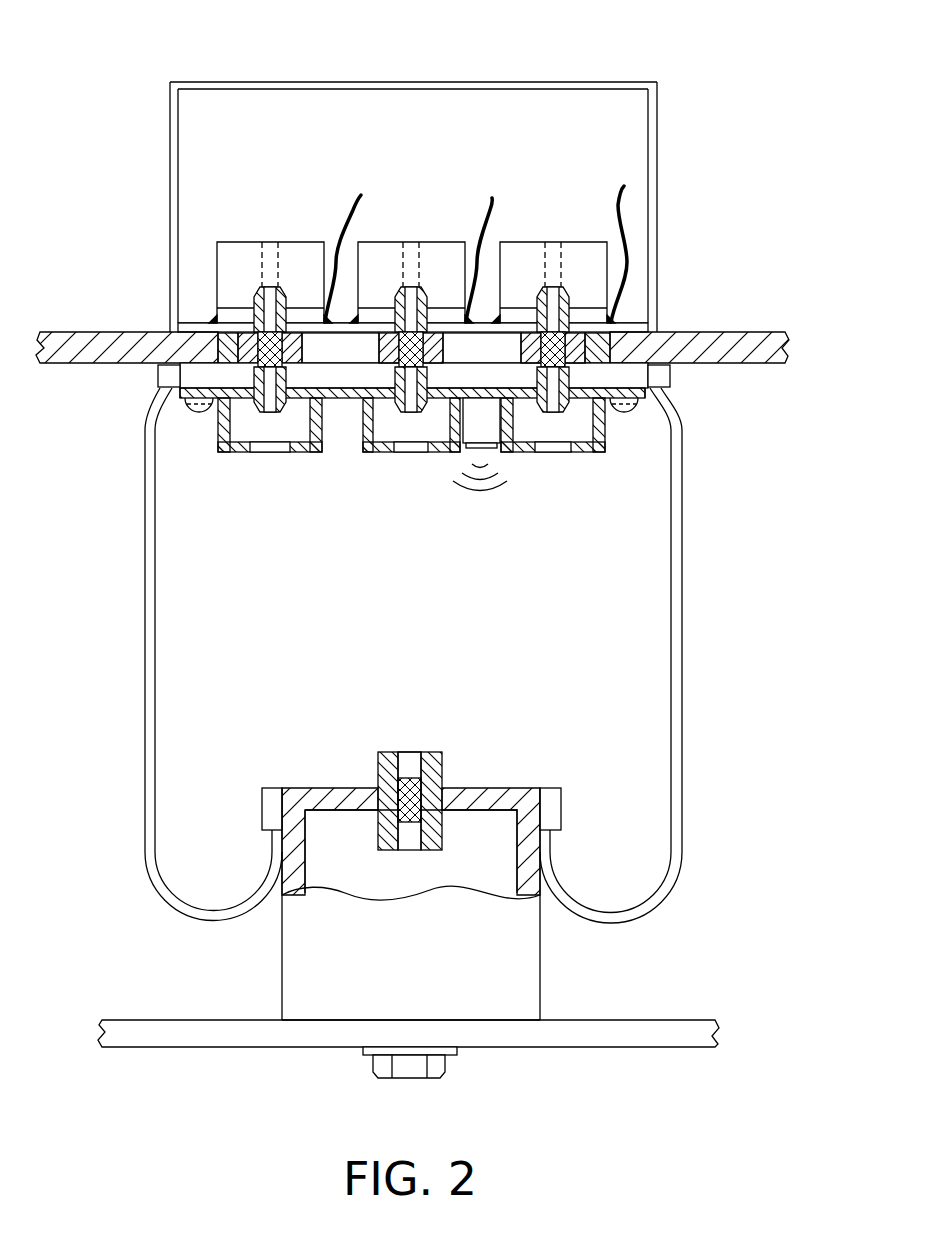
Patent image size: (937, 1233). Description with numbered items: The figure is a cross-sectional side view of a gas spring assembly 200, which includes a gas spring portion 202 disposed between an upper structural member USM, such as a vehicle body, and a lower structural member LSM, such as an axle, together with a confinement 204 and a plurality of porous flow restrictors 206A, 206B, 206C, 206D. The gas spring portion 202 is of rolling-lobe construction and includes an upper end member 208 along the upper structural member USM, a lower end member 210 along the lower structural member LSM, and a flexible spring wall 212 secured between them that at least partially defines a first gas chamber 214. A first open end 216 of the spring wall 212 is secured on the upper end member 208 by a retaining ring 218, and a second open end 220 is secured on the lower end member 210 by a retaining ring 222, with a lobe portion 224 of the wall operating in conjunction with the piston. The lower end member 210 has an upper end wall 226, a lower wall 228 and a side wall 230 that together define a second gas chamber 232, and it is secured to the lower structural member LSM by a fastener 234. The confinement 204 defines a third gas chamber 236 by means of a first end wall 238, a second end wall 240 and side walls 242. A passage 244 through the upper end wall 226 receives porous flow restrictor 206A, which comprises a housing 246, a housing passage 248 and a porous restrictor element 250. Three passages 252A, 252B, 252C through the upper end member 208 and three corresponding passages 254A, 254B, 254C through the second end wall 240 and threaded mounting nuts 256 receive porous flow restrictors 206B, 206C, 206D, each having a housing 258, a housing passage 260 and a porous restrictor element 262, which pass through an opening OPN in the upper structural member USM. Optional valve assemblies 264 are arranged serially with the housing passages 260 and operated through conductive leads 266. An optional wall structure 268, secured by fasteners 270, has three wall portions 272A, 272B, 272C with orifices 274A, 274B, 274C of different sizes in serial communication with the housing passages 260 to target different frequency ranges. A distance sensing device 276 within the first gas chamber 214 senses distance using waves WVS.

The gas spring assembly 200 is at (57, 297).
The gas spring portion 202 is at (132, 612).
The confinement 204 is at (160, 126).
The porous flow restrictor 206A is at (440, 731).
The porous flow restrictor 206B is at (243, 296).
The porous flow restrictor 206C is at (436, 297).
The porous flow restrictor 206D is at (584, 394).
The upper end member 208 is at (344, 398).
The lower end member 210 is at (545, 942).
The flexible spring wall 212 is at (683, 690).
The first gas chamber 214 is at (204, 681).
The first open end 216 is at (684, 424).
The retaining ring 218 is at (668, 375).
The second open end 220 is at (552, 846).
The retaining ring 222 is at (562, 790).
The lobe portion 224 is at (205, 921).
The upper end wall 226 is at (348, 788).
The lower wall 228 is at (330, 1012).
The side wall 230 is at (281, 930).
The second gas chamber 232 is at (403, 876).
The fastener 234 is at (416, 1077).
The third gas chamber 236 is at (286, 117).
The first end wall 238 is at (456, 82).
The second end wall 240 is at (612, 345).
The side wall 242 is at (660, 126).
The passage 244 is at (444, 795).
The housing 246 is at (380, 808).
The housing passage 248 is at (410, 757).
The porous restrictor element 250 is at (430, 812).
The passage 252A is at (288, 400).
The passage 252B is at (426, 400).
The passage 252C is at (540, 415).
The passage 254A is at (230, 333).
The passage 254B is at (340, 348).
The passage 254C is at (482, 348).
The threaded mounting nut 256 is at (358, 262).
The housing 258 is at (218, 405).
The housing passage 260 is at (248, 306).
The porous restrictor element 262 is at (222, 323).
The valve assembly 264 is at (261, 244).
The conductive lead 266 is at (350, 200).
The wall structure 268 is at (207, 443).
The fastener 270 is at (190, 418).
The wall portion 272A is at (232, 452).
The wall portion 272B is at (371, 453).
The wall portion 272C is at (600, 432).
The orifice 274A is at (272, 452).
The orifice 274B is at (408, 453).
The orifice 274C is at (553, 453).
The distance sensing device 276 is at (485, 430).
The opening OPN is at (212, 333).
The upper structural member USM is at (760, 332).
The lower structural member LSM is at (640, 1050).
The waves WVS is at (494, 504).